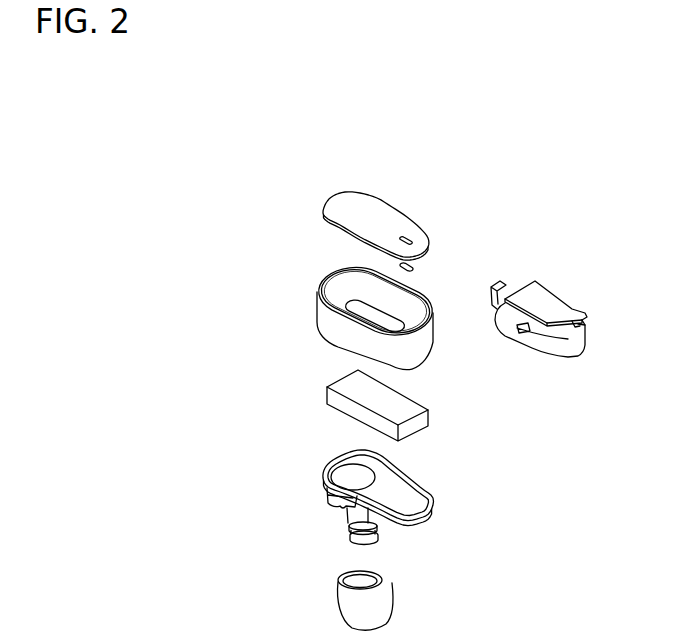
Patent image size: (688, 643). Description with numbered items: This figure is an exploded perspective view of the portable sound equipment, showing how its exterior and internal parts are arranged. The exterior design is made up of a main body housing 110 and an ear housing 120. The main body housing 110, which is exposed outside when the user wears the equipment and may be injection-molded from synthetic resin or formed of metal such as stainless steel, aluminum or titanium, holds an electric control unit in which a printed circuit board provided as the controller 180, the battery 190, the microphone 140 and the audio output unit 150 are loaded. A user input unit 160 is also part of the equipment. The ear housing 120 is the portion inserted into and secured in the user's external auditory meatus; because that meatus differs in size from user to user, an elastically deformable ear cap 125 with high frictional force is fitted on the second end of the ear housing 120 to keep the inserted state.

The main body housing 110 is at (322, 308).
The ear housing 120 is at (348, 522).
The ear cap 125 is at (377, 597).
The microphone 140 is at (416, 266).
The audio output unit 150 is at (518, 336).
The user input unit 160 is at (387, 217).
The controller 180 is at (548, 299).
The battery 190 is at (397, 402).